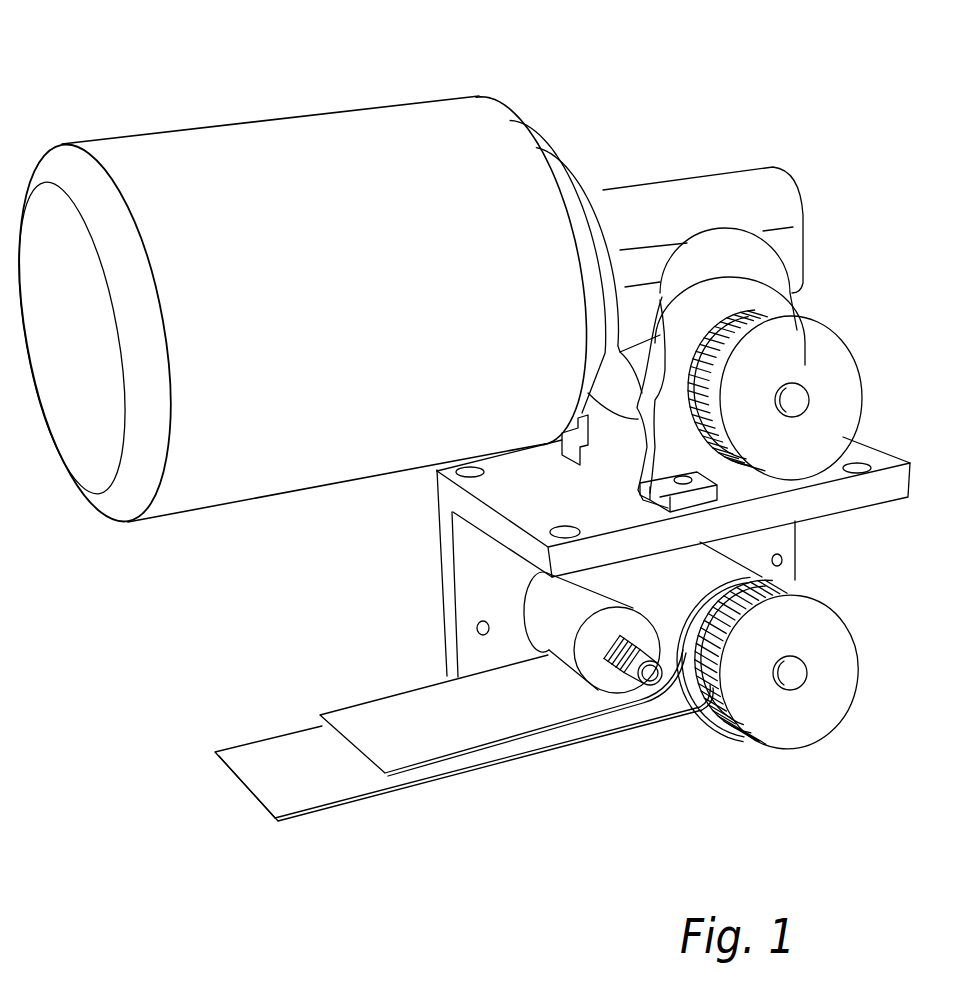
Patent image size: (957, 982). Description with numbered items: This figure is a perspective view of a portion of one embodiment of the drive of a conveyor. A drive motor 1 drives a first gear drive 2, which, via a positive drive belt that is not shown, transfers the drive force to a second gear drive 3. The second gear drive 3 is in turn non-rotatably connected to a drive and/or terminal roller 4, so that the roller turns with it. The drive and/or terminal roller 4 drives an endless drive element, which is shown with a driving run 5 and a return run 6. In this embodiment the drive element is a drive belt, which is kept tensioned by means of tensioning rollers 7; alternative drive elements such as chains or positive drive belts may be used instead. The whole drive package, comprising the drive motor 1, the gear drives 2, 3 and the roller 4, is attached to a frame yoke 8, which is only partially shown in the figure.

The drive motor 1 is at (380, 127).
The first gear drive 2 is at (827, 344).
The second gear drive 3 is at (798, 725).
The drive and/or terminal roller 4 is at (693, 640).
The driving run 5 is at (262, 770).
The return run 6 is at (393, 717).
The tensioning rollers 7 is at (597, 675).
The frame yoke 8 is at (440, 580).